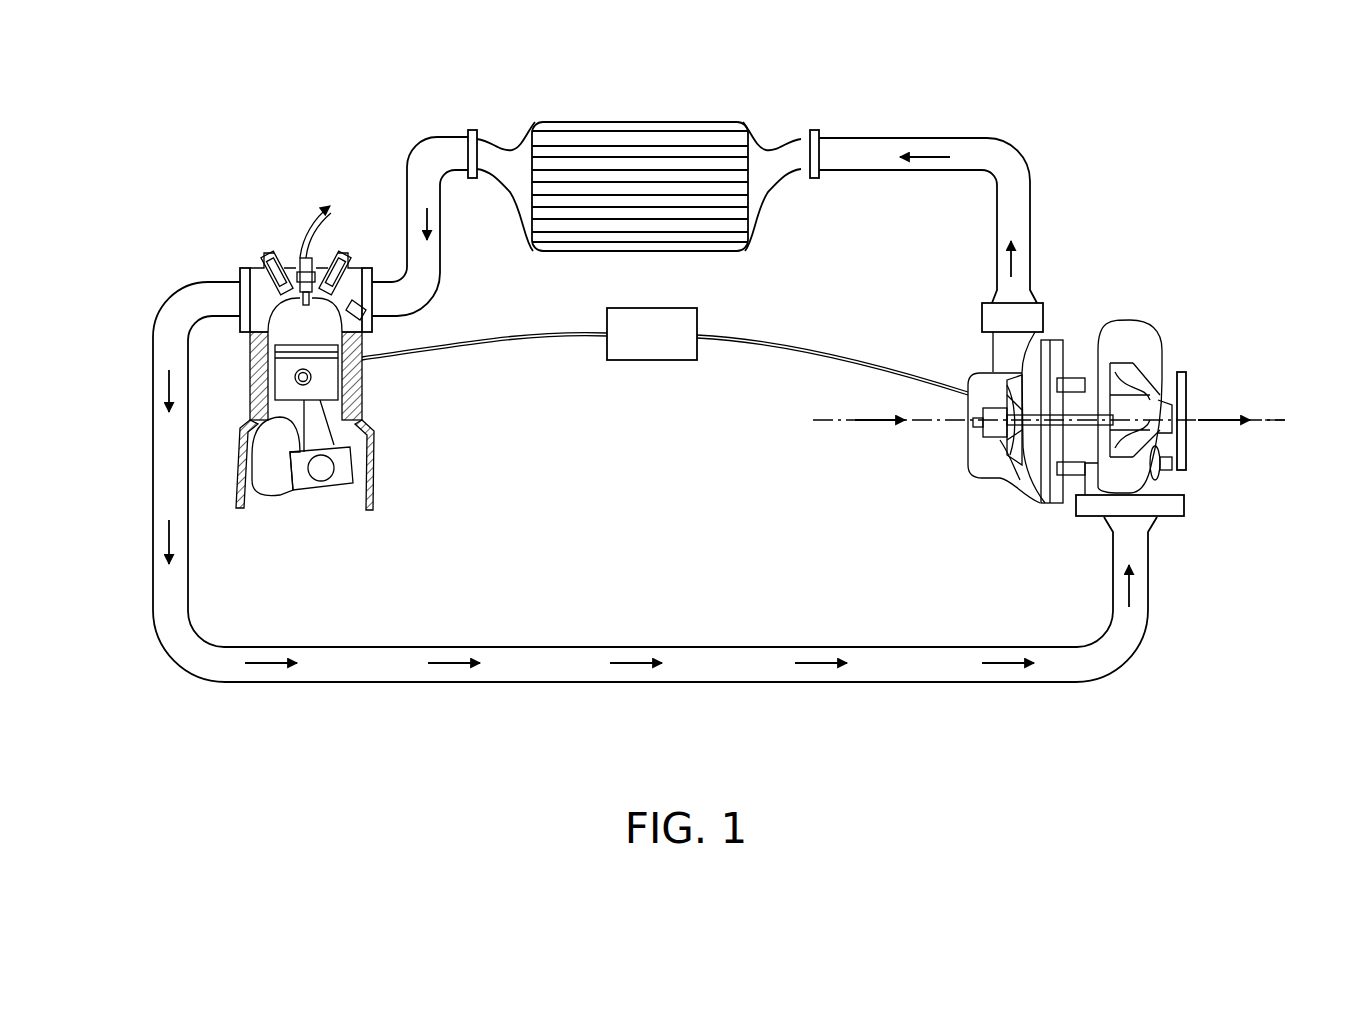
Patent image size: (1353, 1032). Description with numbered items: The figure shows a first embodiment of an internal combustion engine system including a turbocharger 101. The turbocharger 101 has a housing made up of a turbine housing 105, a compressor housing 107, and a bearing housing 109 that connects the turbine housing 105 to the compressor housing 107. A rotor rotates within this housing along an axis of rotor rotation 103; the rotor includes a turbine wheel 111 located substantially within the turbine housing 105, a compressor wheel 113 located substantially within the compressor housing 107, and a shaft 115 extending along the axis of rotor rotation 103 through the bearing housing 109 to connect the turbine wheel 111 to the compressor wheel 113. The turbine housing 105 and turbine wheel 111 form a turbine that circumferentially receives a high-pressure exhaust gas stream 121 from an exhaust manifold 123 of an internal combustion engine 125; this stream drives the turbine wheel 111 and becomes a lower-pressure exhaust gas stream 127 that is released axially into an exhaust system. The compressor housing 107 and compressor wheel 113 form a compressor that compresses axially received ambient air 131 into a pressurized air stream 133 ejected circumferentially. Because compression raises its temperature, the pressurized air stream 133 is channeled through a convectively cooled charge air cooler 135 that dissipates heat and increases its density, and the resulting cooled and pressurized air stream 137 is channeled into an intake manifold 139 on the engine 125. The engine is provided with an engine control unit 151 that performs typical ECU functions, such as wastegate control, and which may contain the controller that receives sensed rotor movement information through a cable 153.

The turbocharger 101 is at (1060, 352).
The axis of rotor rotation 103 is at (1277, 422).
The turbine housing 105 is at (1133, 345).
The compressor housing 107 is at (962, 390).
The bearing housing 109 is at (1072, 382).
The turbine wheel 111 is at (1140, 405).
The compressor wheel 113 is at (1010, 420).
The shaft 115 is at (1068, 425).
The high-pressure exhaust gas stream 121 is at (810, 683).
The exhaust manifold 123 is at (262, 280).
The internal combustion engine 125 is at (323, 378).
The lower-pressure exhaust gas stream 127 is at (1227, 417).
The ambient air 131 is at (887, 418).
The pressurized air stream 133 is at (924, 157).
The charge air cooler 135 is at (624, 143).
The cooled and pressurized air stream 137 is at (415, 228).
The intake manifold 139 is at (360, 307).
The engine control unit (ECU) 151 is at (640, 362).
The cable 153 is at (723, 343).